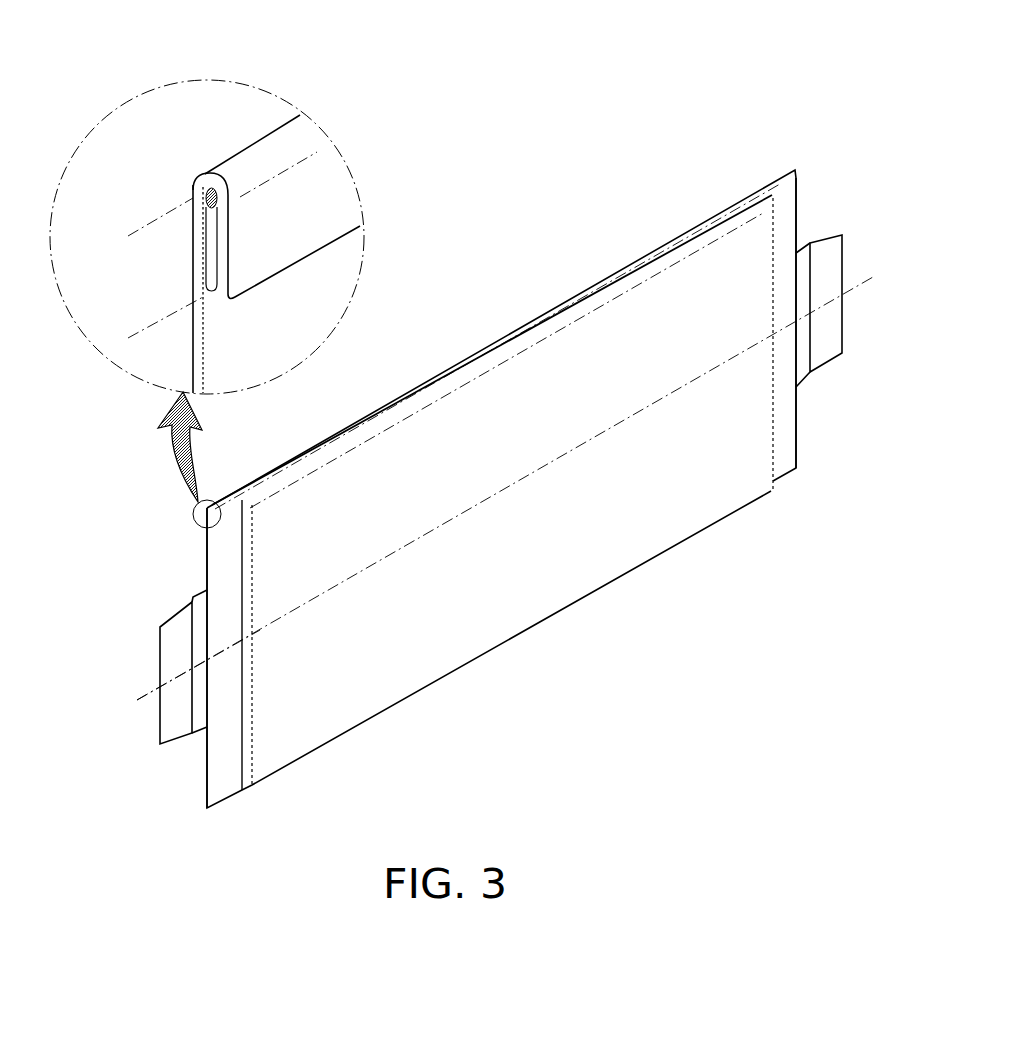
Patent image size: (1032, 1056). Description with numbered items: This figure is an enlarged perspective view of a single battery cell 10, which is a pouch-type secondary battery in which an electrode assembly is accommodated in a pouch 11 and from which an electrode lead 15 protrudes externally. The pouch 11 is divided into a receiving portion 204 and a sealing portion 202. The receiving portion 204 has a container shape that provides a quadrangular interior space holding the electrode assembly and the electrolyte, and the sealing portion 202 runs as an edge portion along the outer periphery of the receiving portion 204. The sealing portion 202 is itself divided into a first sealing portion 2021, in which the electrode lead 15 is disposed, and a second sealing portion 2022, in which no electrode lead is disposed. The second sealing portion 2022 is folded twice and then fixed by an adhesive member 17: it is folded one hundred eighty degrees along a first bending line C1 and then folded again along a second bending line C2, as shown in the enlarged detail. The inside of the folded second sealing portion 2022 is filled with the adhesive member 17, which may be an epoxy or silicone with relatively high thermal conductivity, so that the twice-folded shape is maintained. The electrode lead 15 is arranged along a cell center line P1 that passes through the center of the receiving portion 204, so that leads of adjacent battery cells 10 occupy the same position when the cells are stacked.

The battery cell 10 is at (426, 29).
The pouch 11 is at (537, 629).
The electrode lead 15 is at (177, 727).
The adhesive member 17 is at (218, 210).
The sealing portion 202 is at (778, 113).
The first sealing portion 2021 is at (782, 212).
The second sealing portion 2022 is at (697, 227).
The receiving portion 204 is at (488, 437).
The first bending line C1 is at (173, 310).
The second bending line C2 is at (173, 208).
The cell center line P1 is at (152, 692).